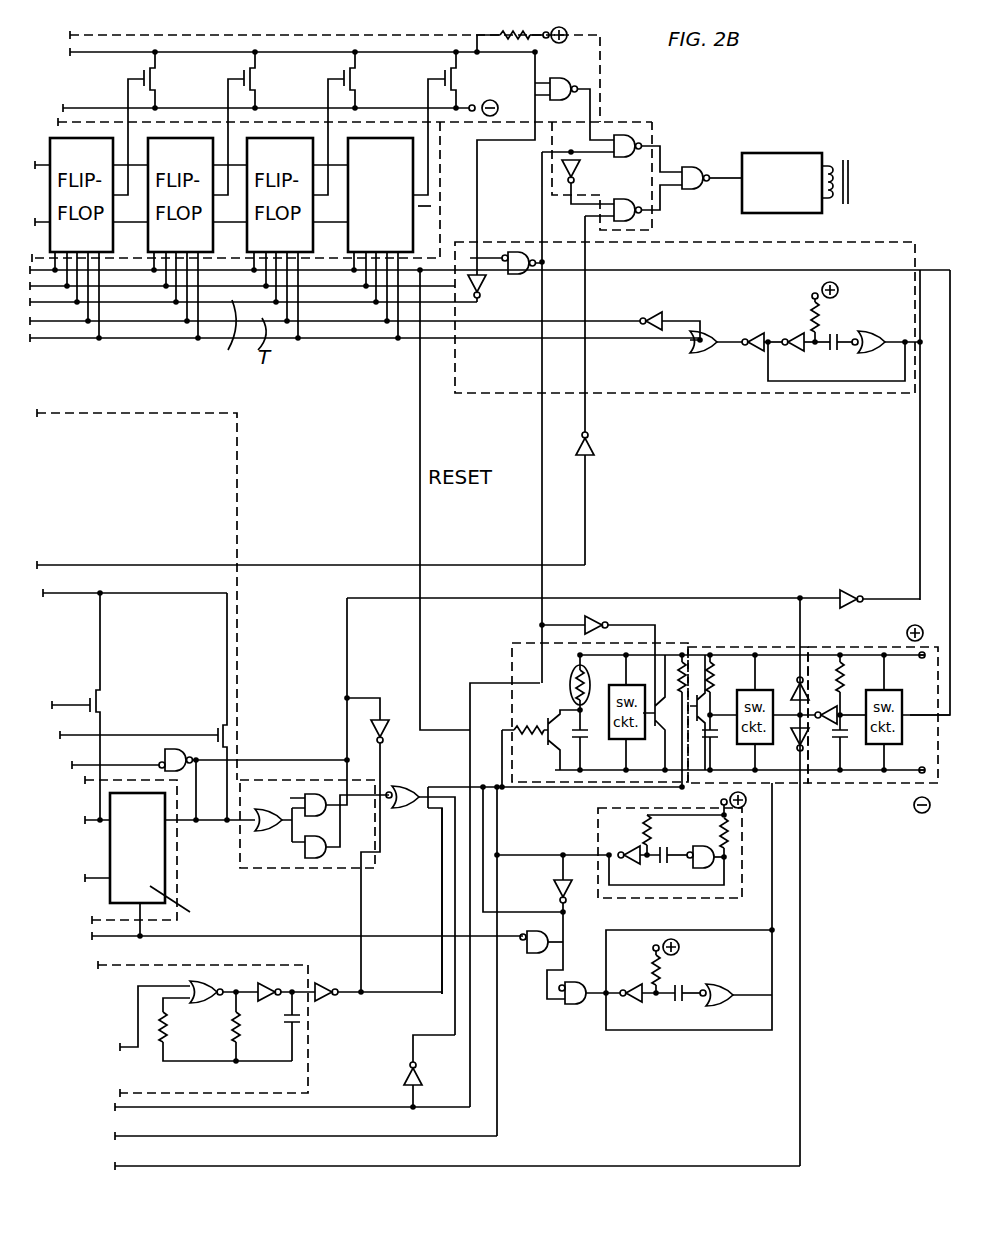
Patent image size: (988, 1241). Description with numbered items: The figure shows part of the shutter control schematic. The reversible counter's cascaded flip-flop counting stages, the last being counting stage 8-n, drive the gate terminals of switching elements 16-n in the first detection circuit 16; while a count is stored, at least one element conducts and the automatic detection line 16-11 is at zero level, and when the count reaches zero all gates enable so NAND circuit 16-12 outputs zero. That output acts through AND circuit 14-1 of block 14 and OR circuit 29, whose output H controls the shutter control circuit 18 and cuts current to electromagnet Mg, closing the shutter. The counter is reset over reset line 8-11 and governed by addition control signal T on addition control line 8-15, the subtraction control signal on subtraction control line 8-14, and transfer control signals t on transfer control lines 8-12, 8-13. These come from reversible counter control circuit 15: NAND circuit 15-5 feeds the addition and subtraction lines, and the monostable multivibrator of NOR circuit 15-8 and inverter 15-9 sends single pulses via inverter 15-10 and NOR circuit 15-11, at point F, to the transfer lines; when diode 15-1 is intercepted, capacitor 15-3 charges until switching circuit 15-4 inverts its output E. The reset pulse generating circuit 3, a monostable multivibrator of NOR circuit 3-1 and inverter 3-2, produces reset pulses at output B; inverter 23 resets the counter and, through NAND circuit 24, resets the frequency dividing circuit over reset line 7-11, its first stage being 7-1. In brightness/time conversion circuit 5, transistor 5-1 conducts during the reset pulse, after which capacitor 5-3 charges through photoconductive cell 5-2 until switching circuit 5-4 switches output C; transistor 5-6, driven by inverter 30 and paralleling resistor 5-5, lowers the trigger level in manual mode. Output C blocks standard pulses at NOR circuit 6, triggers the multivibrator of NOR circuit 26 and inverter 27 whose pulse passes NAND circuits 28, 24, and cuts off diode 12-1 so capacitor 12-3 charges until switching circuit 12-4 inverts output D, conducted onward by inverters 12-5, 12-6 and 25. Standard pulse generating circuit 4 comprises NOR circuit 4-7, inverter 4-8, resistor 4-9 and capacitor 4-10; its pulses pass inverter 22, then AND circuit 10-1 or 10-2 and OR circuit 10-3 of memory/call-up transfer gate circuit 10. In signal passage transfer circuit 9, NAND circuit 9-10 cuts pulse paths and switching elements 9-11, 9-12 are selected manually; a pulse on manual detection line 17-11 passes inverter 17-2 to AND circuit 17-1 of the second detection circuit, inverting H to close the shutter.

The No. 1 detection circuit 16 is at (600, 77).
The automatic detection line 16-11 is at (270, 122).
The switching element 16-n is at (460, 80).
The NAND circuit 16-12 is at (574, 95).
The flip-flop counting stage 8-n is at (390, 169).
The addition control line 8-15 is at (338, 268).
The subtraction control line 8-14 is at (344, 338).
The transfer control line 8-12 is at (527, 321).
The transfer control line 8-13 is at (465, 340).
The reset line 8-11 is at (420, 430).
The gate circuit 14 is at (652, 130).
The AND circuit 14-1 is at (589, 176).
The OR circuit 29 is at (694, 190).
The AND circuit 17-1 is at (690, 226).
The inverter 17-2 is at (595, 448).
The manual detection line 17-11 is at (322, 560).
The shutter control circuit 18 is at (775, 150).
The reversible counter control circuit 15 is at (868, 242).
The NAND circuit 15-5 is at (505, 277).
The NOR circuit 15-11 is at (700, 356).
The inverter 15-10 is at (745, 334).
The inverter 15-9 is at (786, 348).
The NOR circuit 15-8 is at (880, 332).
The diode 15-1 is at (861, 683).
The capacitor 15-3 is at (852, 740).
The switching circuit 15-4 is at (879, 719).
The signal passage transfer circuit 9 is at (240, 437).
The NAND circuit 9-10 is at (163, 756).
The transistor 9-11 is at (212, 730).
The switching element 9-12 is at (108, 706).
The inverter 25 is at (855, 592).
The inverter 30 is at (600, 625).
The brightness/time conversion circuit 5 is at (512, 658).
The transistor 5-1 is at (540, 742).
The photoconductive cell 5-2 is at (568, 682).
The capacitor 5-3 is at (588, 742).
The switching circuit 5-4 is at (613, 690).
The resistor 5-5 is at (656, 700).
The transistor 5-6 is at (680, 662).
The diode 12-1 is at (692, 690).
The capacitor 12-3 is at (722, 740).
The switching circuit 12-4 is at (731, 685).
The inverter 12-5 is at (792, 740).
The inverter 12-6 is at (782, 882).
The frequency dividing stage 7-1 is at (150, 839).
The reset line 7-11 is at (276, 936).
The memory/call-up transfer gate circuit 10 is at (322, 868).
The AND circuit 10-1 is at (290, 805).
The AND circuit 10-2 is at (330, 845).
The OR circuit 10-3 is at (255, 838).
The NOR circuit 6 is at (405, 808).
The reset pulse generating circuit 3 is at (676, 892).
The NOR circuit 3-1 is at (704, 848).
The inverter 3-2 is at (632, 850).
The inverter 23 is at (566, 898).
The NAND circuit 24 is at (532, 952).
The NOR circuit 26 is at (722, 988).
The inverter 27 is at (624, 985).
The NAND circuit 28 is at (576, 1008).
The standard pulse generating circuit 4 is at (134, 970).
The NOR circuit 4-7 is at (212, 996).
The inverter 4-8 is at (260, 982).
The resistor 4-9 is at (230, 1034).
The capacitor 4-10 is at (284, 1022).
The inverter 22 is at (330, 996).
The input end of shutter control circuit H is at (728, 168).
The electromagnet Mg is at (834, 158).
The addition control signal T is at (240, 347).
The transfer control signal t is at (608, 349).
The signal F is at (660, 347).
The output of inverter 3-2 B is at (569, 847).
The output of switching circuit 5-4 C is at (679, 795).
The output of switching circuit 12-4 D is at (811, 710).
The output point of switching circuit 15-4 E is at (925, 729).